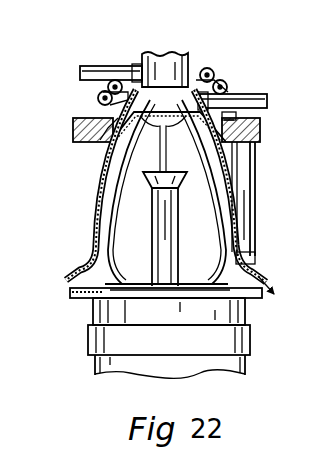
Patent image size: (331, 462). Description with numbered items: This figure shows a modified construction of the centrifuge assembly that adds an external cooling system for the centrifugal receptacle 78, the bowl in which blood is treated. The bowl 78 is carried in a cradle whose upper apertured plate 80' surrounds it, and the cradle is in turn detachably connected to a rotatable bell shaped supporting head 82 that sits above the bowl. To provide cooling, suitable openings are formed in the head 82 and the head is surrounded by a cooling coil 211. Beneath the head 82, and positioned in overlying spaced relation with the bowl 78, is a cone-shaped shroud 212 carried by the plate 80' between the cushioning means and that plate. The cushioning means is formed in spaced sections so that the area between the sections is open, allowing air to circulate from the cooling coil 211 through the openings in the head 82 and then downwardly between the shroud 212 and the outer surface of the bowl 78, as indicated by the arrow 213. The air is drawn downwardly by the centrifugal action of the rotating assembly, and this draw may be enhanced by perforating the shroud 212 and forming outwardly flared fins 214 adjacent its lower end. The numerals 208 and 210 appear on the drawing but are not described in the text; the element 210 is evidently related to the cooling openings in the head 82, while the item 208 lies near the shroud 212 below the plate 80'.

The centrifugal receptacle 78 is at (200, 198).
The upper apertured plate 80' is at (151, 127).
The bell shaped supporting head 82 is at (134, 84).
The diaphragm membrane 208 is at (98, 147).
The left guide bar with rollers 210 is at (100, 97).
The cooling coil 211 is at (226, 87).
The cone-shaped shroud 212 is at (92, 208).
The arrow 213 is at (74, 282).
The outwardly flared fins 214 is at (252, 246).